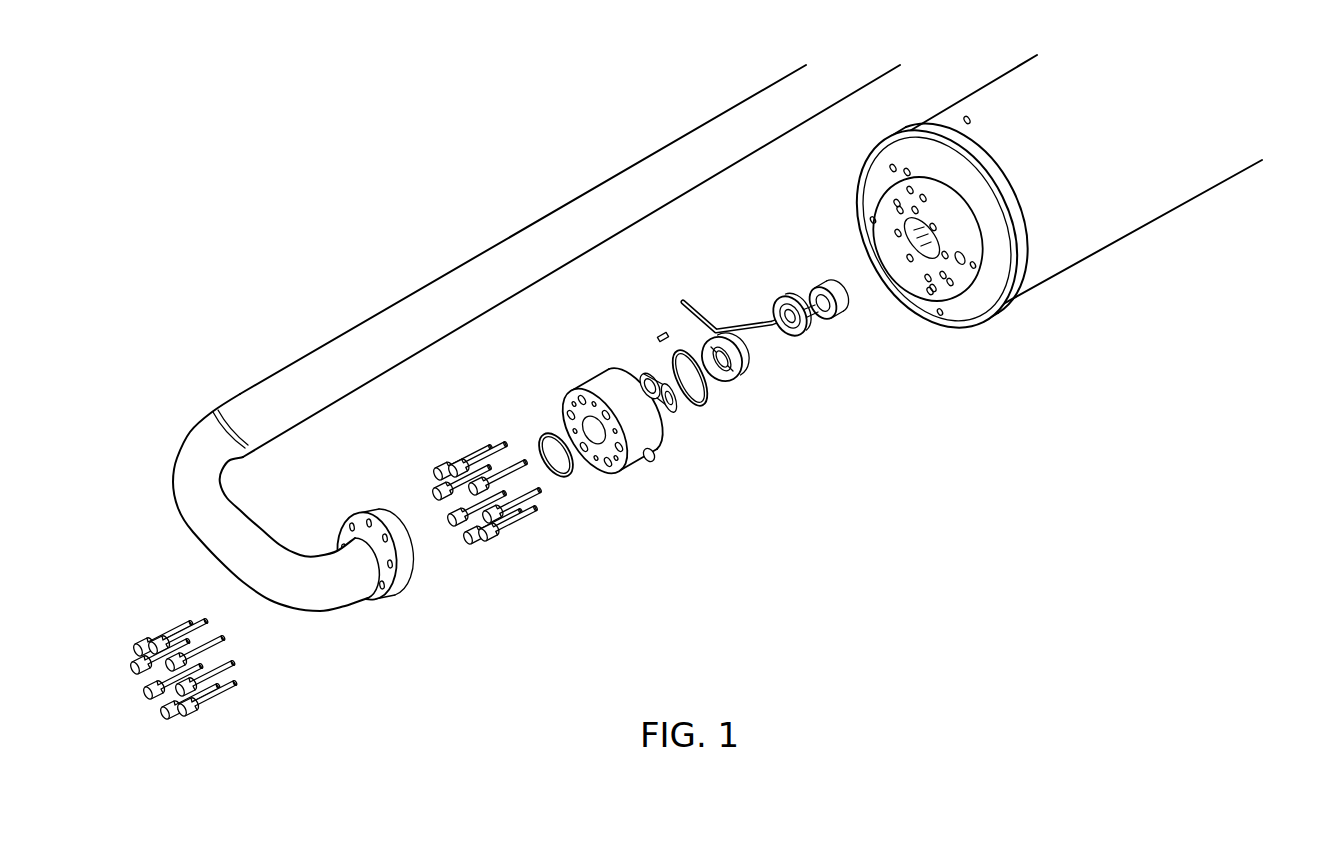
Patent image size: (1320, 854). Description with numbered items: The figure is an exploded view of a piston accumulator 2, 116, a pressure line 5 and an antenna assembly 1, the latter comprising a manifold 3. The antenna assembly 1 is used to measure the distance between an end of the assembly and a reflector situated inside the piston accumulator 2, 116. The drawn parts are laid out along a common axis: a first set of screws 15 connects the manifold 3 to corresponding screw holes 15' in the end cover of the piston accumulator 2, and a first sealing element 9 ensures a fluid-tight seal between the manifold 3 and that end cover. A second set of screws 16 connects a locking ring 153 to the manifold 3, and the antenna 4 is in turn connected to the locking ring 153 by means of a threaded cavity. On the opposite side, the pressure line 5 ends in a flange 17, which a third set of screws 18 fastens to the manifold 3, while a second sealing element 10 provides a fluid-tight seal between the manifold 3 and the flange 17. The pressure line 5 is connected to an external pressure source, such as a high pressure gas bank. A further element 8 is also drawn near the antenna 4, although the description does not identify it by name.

The antenna assembly 1 is at (748, 603).
The piston accumulator 2 is at (1078, 336).
The piston accumulator 116 is at (1043, 234).
The manifold 3 is at (666, 440).
The antenna 4 is at (783, 301).
The pressure line 5 is at (453, 270).
The shaft 8 is at (702, 315).
The first sealing element 9 is at (708, 403).
The second sealing element 10 is at (567, 478).
The first set of screws 15 is at (498, 504).
The screw holes 15' is at (913, 329).
The second set of screws 16 is at (654, 338).
The flange 17 is at (412, 589).
The third set of screws 18 is at (202, 707).
The locking ring 153 is at (735, 375).